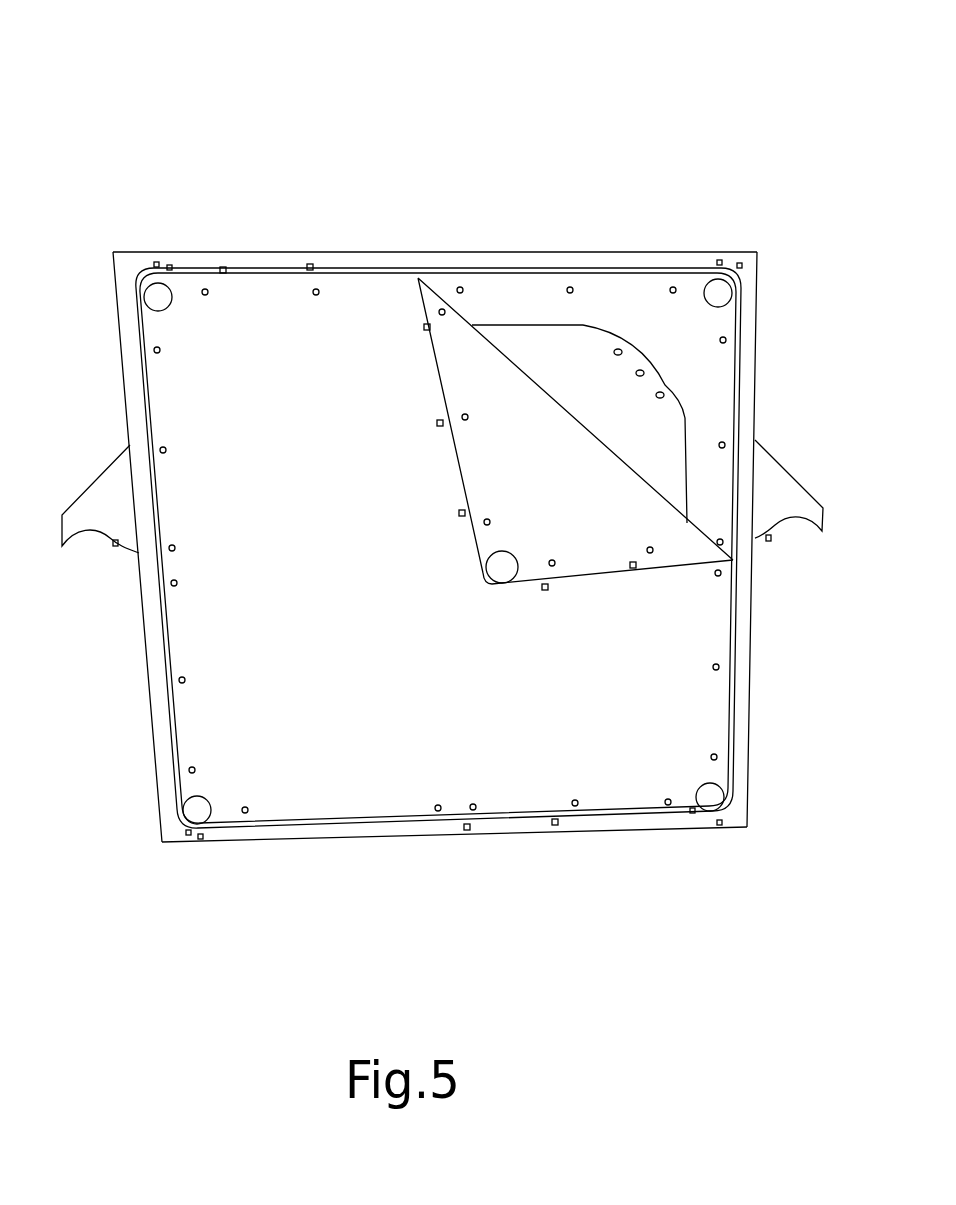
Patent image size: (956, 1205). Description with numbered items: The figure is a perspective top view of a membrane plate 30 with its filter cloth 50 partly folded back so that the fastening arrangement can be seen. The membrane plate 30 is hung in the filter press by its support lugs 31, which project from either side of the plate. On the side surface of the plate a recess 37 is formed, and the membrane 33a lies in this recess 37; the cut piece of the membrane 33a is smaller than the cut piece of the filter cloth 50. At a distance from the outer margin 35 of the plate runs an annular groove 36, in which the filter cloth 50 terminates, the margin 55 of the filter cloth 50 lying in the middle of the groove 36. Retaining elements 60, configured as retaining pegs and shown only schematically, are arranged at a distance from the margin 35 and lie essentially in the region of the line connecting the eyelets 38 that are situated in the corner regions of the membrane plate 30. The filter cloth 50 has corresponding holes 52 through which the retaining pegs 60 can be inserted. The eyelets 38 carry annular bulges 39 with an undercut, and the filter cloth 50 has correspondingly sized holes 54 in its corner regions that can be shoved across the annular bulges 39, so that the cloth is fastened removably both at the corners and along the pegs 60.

The membrane plate 30 is at (438, 218).
The support lug 31 is at (117, 525).
The membrane 33a is at (688, 417).
The margin 35 is at (487, 250).
The annular groove 36 is at (533, 267).
The recess 37 is at (603, 325).
The eyelet 38 is at (163, 300).
The annular bulge 39 is at (157, 263).
The filter cloth 50 is at (365, 762).
The hole 52 is at (485, 521).
The corner hole 54 is at (483, 573).
The margin of the filter element 55 is at (282, 842).
The retaining element 60 is at (315, 289).